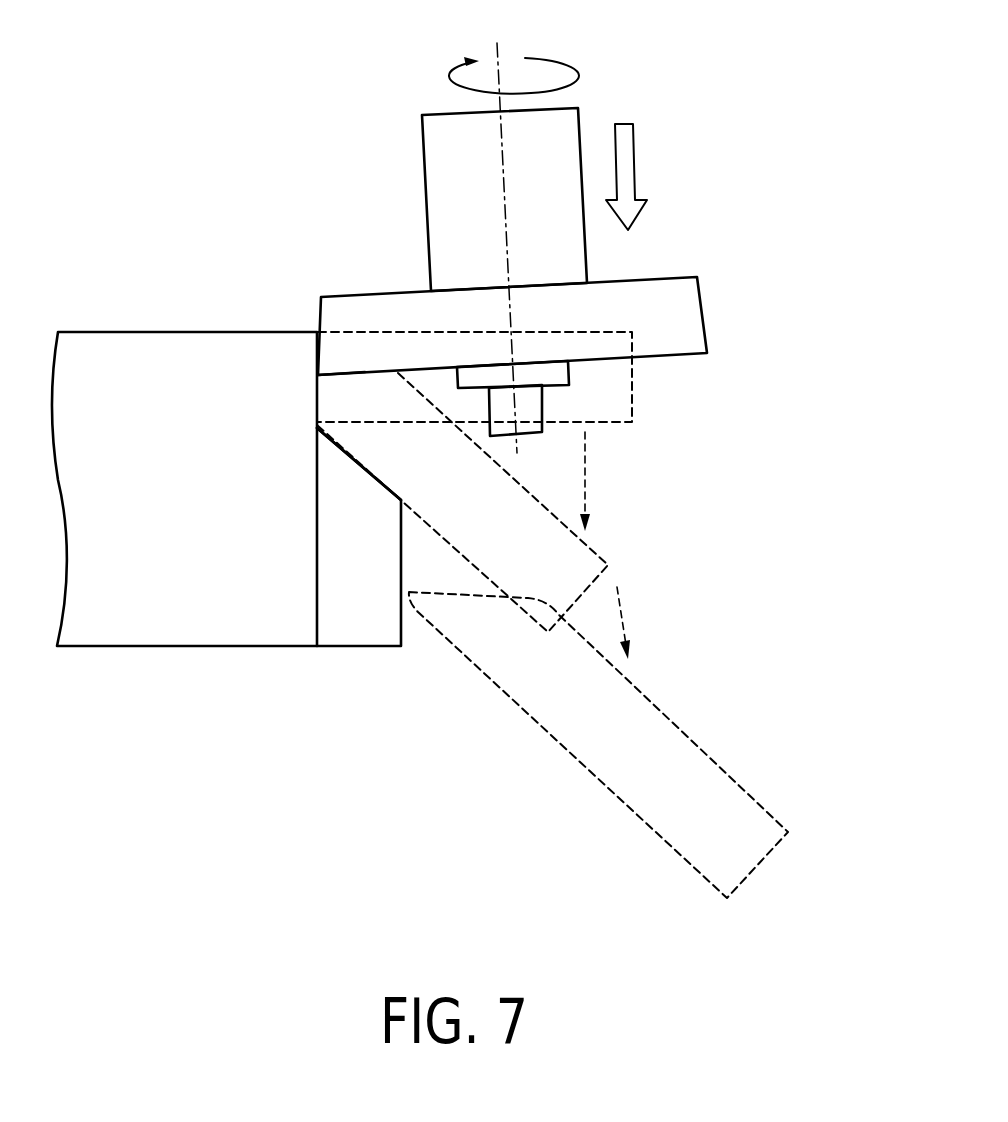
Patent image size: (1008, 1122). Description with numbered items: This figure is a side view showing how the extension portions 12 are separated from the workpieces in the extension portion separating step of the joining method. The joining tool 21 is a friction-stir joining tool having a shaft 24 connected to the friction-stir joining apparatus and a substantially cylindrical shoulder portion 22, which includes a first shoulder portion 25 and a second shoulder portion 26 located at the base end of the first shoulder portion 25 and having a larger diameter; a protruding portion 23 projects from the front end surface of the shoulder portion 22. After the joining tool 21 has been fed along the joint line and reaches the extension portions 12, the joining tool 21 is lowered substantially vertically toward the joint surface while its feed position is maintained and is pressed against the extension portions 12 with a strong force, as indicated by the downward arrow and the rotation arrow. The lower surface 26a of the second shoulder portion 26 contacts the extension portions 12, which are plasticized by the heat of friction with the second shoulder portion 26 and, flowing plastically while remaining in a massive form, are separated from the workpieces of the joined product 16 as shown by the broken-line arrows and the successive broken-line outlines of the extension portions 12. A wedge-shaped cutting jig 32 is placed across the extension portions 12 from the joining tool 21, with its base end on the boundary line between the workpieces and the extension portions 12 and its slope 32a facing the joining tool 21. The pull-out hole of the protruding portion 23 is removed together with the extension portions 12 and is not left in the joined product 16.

The extension portion 12 is at (632, 400).
The joined product 16 is at (145, 332).
The joining tool 21 is at (535, 234).
The shoulder portion 22 is at (535, 348).
The protruding portion 23 is at (542, 410).
The shaft 24 is at (423, 178).
The first shoulder portion 25 is at (570, 373).
The second shoulder portion 26 is at (707, 323).
The second shoulder portion surface 26a is at (363, 373).
The cutting jig 32 is at (358, 647).
The slope 32a is at (372, 478).